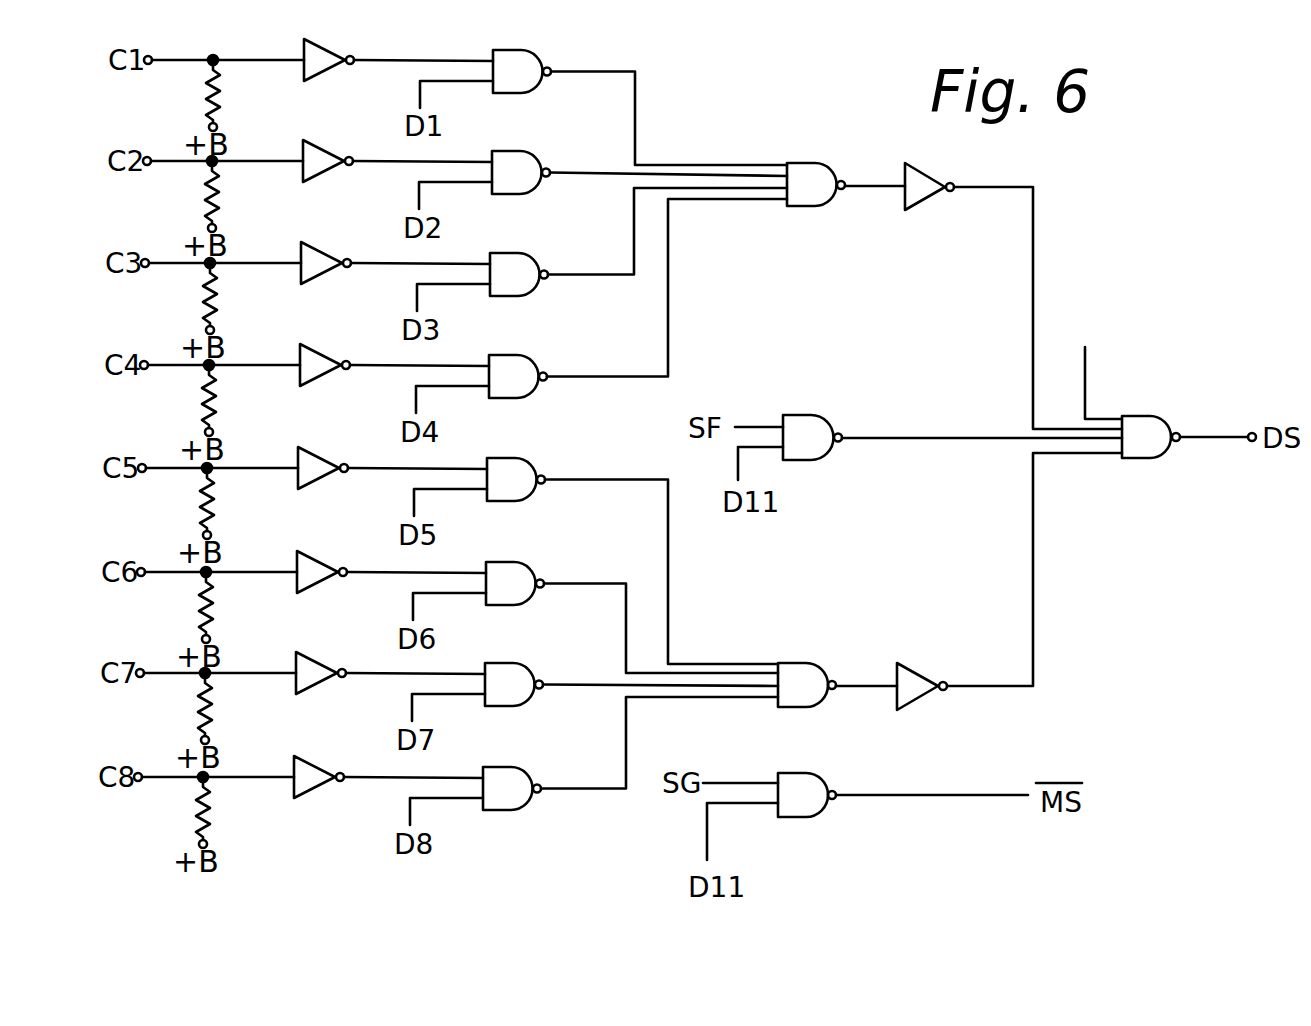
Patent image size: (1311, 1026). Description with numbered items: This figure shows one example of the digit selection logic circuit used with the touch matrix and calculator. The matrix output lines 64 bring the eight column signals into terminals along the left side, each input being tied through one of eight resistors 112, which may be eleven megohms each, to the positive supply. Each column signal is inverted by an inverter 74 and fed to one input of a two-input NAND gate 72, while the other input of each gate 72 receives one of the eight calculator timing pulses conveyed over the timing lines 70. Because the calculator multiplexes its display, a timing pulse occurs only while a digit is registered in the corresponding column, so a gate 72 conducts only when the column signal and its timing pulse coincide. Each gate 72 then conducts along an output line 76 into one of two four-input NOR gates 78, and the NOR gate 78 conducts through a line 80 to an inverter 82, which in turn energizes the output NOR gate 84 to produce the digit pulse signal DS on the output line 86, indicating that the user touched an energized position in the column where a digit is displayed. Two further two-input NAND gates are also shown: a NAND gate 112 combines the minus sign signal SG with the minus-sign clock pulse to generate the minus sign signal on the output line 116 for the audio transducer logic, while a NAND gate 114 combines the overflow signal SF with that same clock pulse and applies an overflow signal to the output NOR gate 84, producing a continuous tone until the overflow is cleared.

The matrix output lines 64 is at (179, 61).
The timing lines 70 is at (420, 97).
The two-input NAND gate 72 is at (527, 93).
The inverter 74 is at (322, 690).
The output line 76 is at (567, 788).
The four-input NOR gate 78 is at (828, 206).
The line 80 is at (858, 687).
The inverter 82 is at (932, 200).
The output NOR gate 84 is at (1160, 458).
The output line 86 is at (1206, 434).
The resistor; NAND gate 112 is at (206, 198).
The two-input NAND gate 114 is at (822, 416).
The output line 116 is at (878, 795).